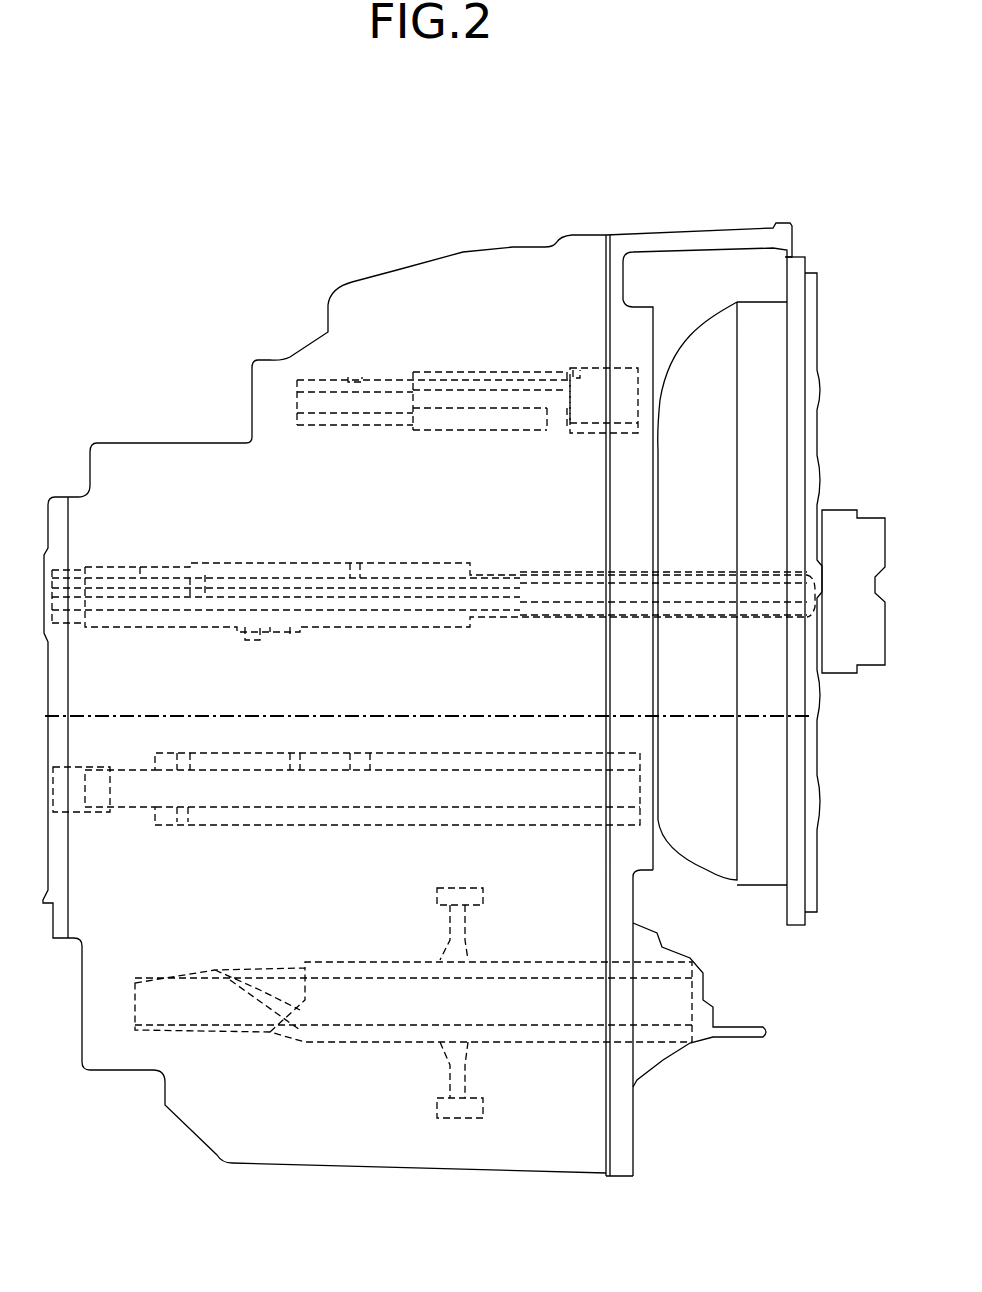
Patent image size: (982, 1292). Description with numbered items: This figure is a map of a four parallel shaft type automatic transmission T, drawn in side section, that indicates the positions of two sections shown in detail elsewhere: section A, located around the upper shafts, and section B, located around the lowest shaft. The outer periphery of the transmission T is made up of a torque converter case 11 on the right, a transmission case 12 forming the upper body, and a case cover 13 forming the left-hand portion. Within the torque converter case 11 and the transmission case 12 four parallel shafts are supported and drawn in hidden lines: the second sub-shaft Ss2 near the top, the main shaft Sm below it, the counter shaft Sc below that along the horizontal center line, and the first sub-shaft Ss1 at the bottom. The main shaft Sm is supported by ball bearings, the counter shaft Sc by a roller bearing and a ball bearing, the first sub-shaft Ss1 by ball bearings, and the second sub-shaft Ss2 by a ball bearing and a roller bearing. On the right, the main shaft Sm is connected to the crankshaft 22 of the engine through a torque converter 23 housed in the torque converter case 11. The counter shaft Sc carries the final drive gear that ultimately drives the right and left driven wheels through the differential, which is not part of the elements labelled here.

The four parallel shaft type automatic transmission T is at (314, 287).
The torque converter case 11 is at (673, 238).
The transmission case 12 is at (399, 280).
The case cover 13 is at (60, 515).
The crankshaft 22 is at (839, 528).
The torque converter 23 is at (683, 322).
The second sub-shaft Ss2 is at (393, 380).
The main shaft Sm is at (318, 562).
The counter shaft Sc is at (352, 752).
The first sub-shaft Ss1 is at (488, 970).
The section A is at (362, 511).
The section B is at (369, 888).